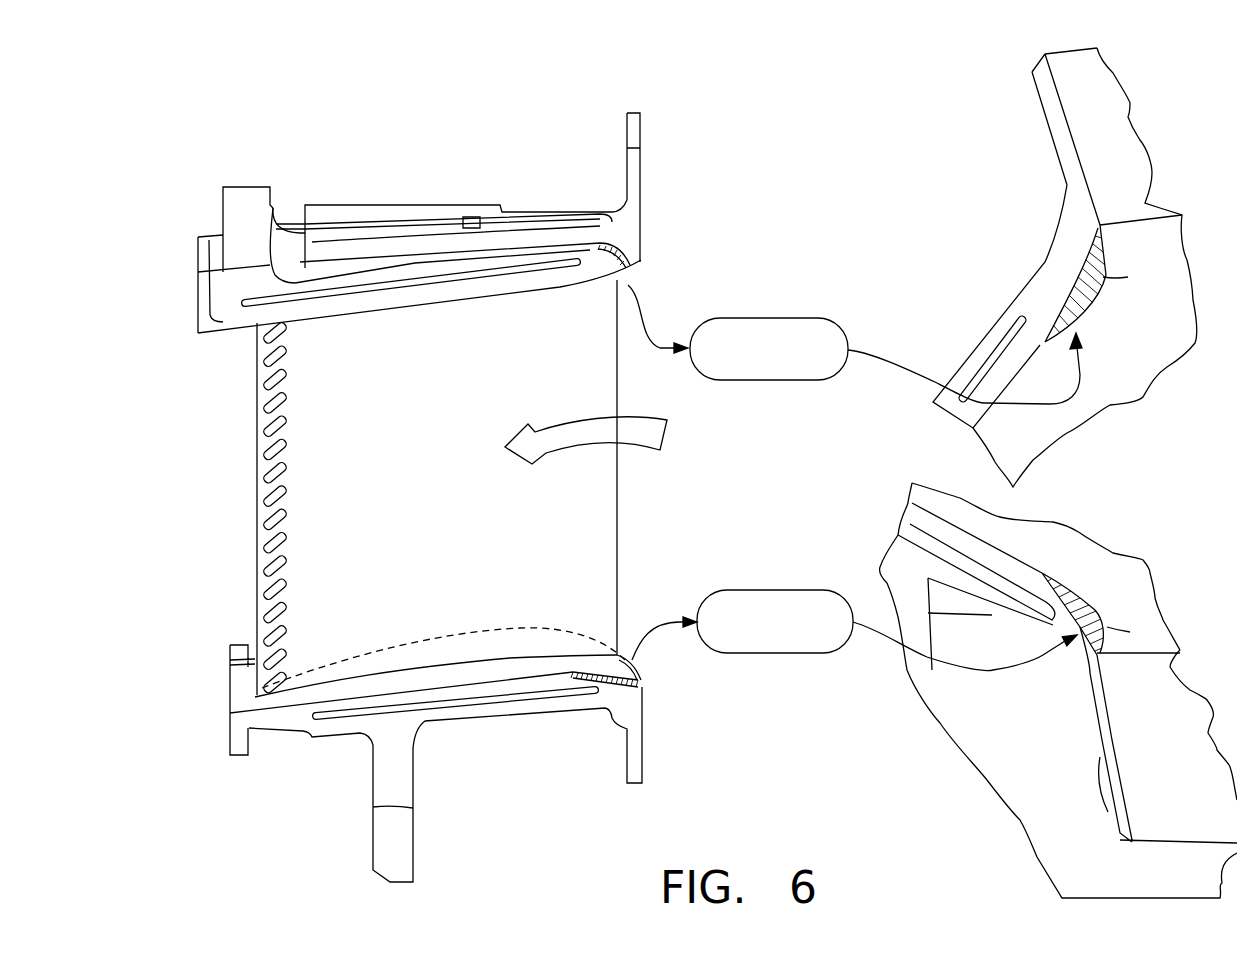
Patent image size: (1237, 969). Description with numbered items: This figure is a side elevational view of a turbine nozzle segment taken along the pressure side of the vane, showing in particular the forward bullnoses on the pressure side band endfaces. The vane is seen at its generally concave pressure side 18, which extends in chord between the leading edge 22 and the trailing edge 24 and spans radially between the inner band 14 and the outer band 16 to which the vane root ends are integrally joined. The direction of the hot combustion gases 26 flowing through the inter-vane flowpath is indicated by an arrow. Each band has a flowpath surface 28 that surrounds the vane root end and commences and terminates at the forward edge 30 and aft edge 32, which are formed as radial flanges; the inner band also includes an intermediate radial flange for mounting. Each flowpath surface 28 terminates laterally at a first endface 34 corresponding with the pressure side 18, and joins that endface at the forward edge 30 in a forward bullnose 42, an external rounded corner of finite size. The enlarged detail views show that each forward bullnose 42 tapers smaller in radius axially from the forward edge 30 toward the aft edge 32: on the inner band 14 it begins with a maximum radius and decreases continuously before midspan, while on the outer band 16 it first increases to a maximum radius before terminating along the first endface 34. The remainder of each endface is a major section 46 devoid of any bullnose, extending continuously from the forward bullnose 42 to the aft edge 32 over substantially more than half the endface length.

The inner band 14 is at (507, 720).
The outer band 16 is at (288, 205).
The pressure side 18 is at (383, 516).
The leading edge 22 is at (620, 382).
The trailing edge 24 is at (257, 470).
The combustion gases 26 is at (598, 440).
The flowpath surface 28 is at (330, 312).
The forward edge 30 is at (640, 268).
The aft edge 32 is at (208, 294).
The first endface 34 is at (235, 325).
The forward bullnose 42 is at (590, 290).
The major section 46 is at (437, 305).